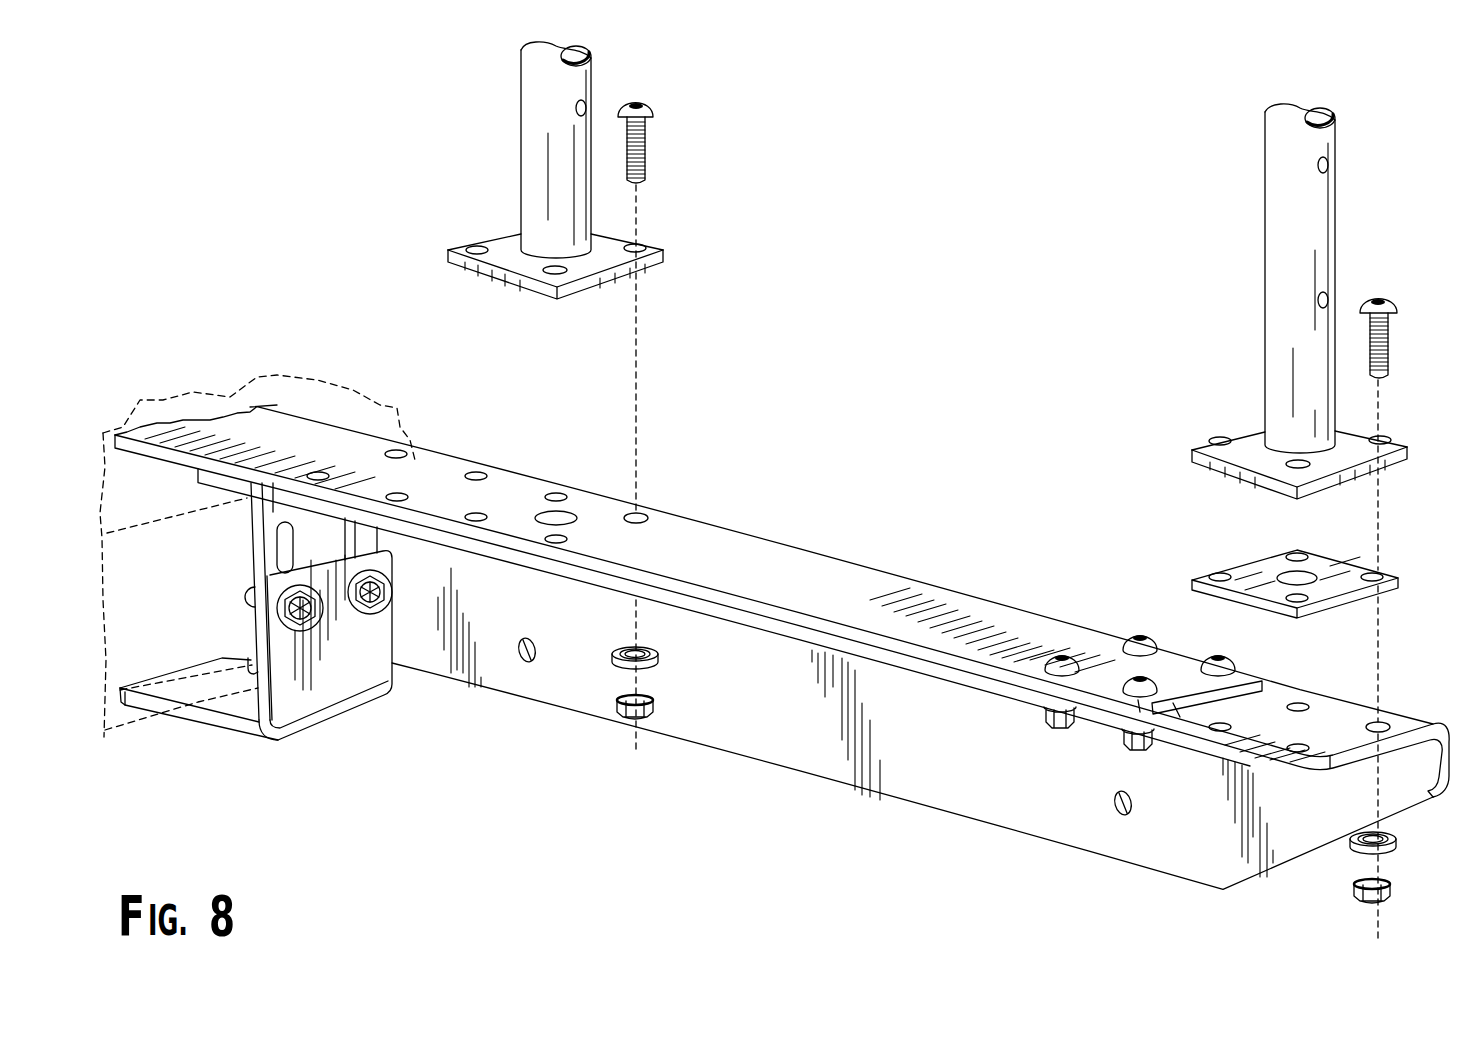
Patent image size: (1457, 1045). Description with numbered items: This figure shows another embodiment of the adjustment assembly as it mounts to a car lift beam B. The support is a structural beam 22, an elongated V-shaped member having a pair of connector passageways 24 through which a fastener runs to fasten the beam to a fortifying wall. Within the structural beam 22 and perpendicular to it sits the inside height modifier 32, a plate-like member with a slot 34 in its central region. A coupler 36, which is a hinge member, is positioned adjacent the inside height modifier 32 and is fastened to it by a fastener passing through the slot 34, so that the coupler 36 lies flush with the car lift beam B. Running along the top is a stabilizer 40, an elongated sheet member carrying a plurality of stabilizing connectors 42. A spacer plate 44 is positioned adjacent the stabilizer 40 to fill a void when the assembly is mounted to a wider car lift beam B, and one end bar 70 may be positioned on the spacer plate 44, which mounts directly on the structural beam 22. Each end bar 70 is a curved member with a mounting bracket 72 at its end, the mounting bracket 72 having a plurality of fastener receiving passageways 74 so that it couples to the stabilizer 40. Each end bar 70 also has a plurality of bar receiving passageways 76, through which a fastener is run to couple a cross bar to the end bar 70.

The structural beam 22 is at (948, 672).
The connector passageway 24 is at (527, 661).
The inside height modifier 32 is at (275, 513).
The slot 34 is at (273, 553).
The coupler 36 is at (332, 690).
The stabilizer 40 is at (961, 607).
The stabilizing connector 42 is at (393, 450).
The spacer plate 44 is at (1235, 565).
The end bar 70 is at (523, 86).
The mounting bracket 72 is at (499, 232).
The fastener receiving passageway 74 is at (640, 250).
The bar receiving passageway 76 is at (581, 107).
The car lift beam B is at (317, 380).